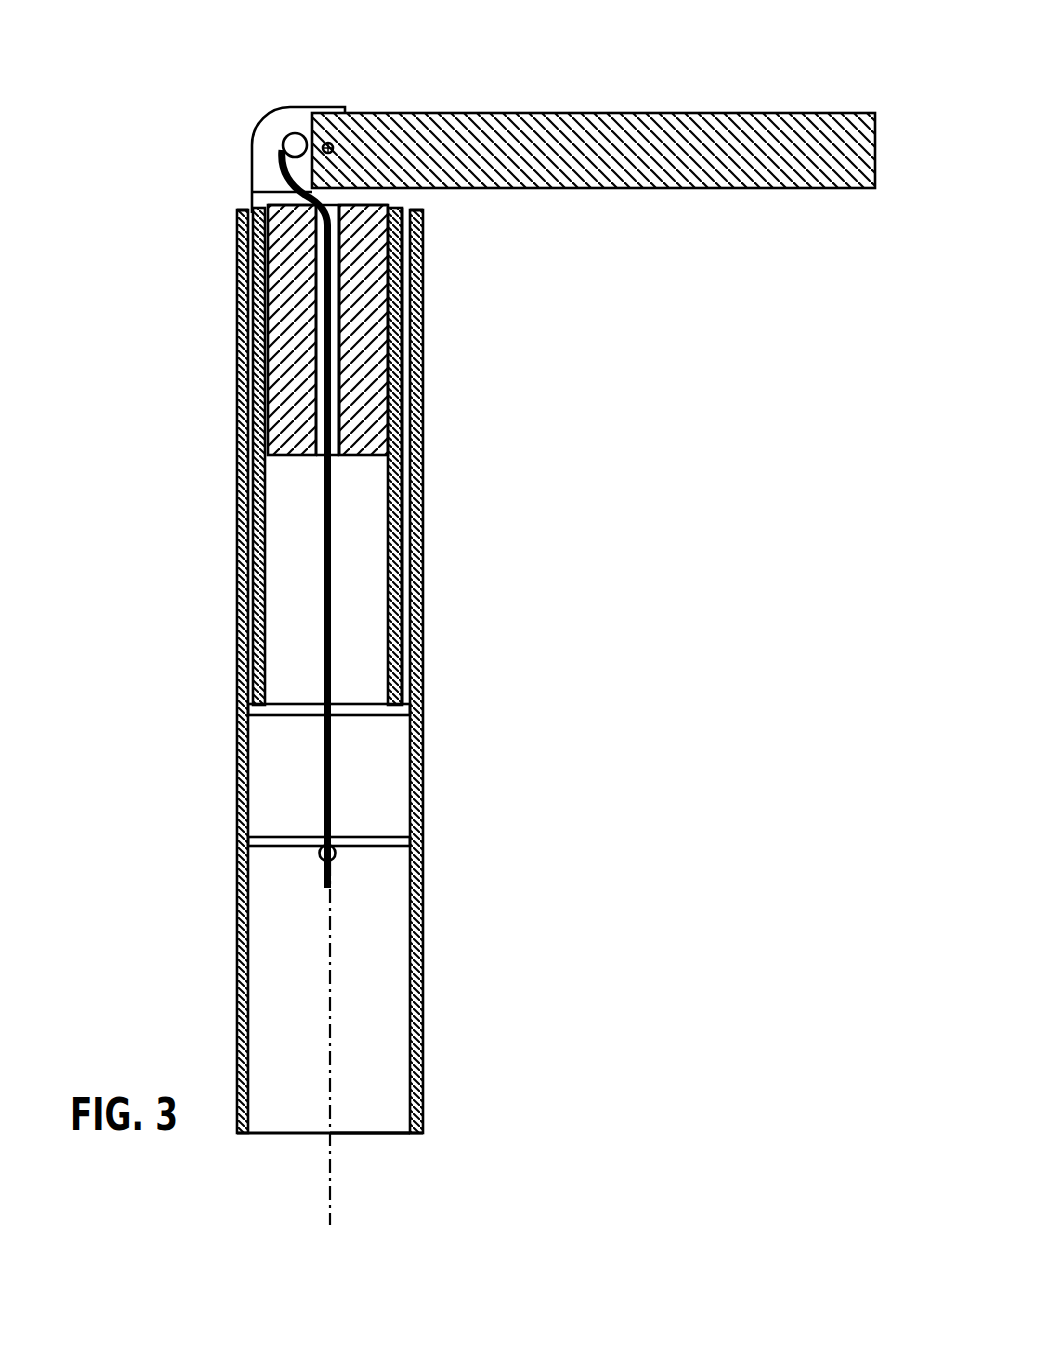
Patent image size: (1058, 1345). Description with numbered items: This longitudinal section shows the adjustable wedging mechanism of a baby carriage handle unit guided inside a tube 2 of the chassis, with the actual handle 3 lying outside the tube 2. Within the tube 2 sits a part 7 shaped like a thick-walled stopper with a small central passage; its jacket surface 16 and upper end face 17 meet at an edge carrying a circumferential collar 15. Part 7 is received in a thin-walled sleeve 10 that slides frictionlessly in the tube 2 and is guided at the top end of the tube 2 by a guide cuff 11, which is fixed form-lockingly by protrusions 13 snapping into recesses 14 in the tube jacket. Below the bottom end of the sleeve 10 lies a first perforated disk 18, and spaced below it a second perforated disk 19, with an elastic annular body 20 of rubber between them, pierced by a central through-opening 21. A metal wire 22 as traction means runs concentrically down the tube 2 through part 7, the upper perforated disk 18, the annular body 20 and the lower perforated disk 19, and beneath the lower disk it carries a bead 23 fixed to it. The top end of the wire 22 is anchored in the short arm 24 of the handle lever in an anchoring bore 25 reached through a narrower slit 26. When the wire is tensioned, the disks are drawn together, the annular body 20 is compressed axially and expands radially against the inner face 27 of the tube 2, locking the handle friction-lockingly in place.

The tube 2 is at (424, 1024).
The handle 3 is at (660, 140).
The part 7 is at (388, 427).
The thin-walled sleeve 10 is at (400, 605).
The guide cuff 11 is at (414, 297).
The protrusions 13 is at (248, 356).
The recesses 14 is at (323, 458).
The collar 15 is at (252, 198).
The jacket surface 16 is at (402, 373).
The upper end face 17 is at (260, 202).
The first perforated disk 18 is at (418, 708).
The second perforated disk 19 is at (412, 843).
The annular body 20 is at (396, 796).
The central through-opening 21 is at (324, 780).
The metal wire 22 is at (336, 558).
The bead 23 is at (338, 856).
The short arm 24 is at (305, 118).
The anchoring bore 25 is at (305, 135).
The slit 26 is at (285, 128).
The inner face 27 is at (412, 1100).